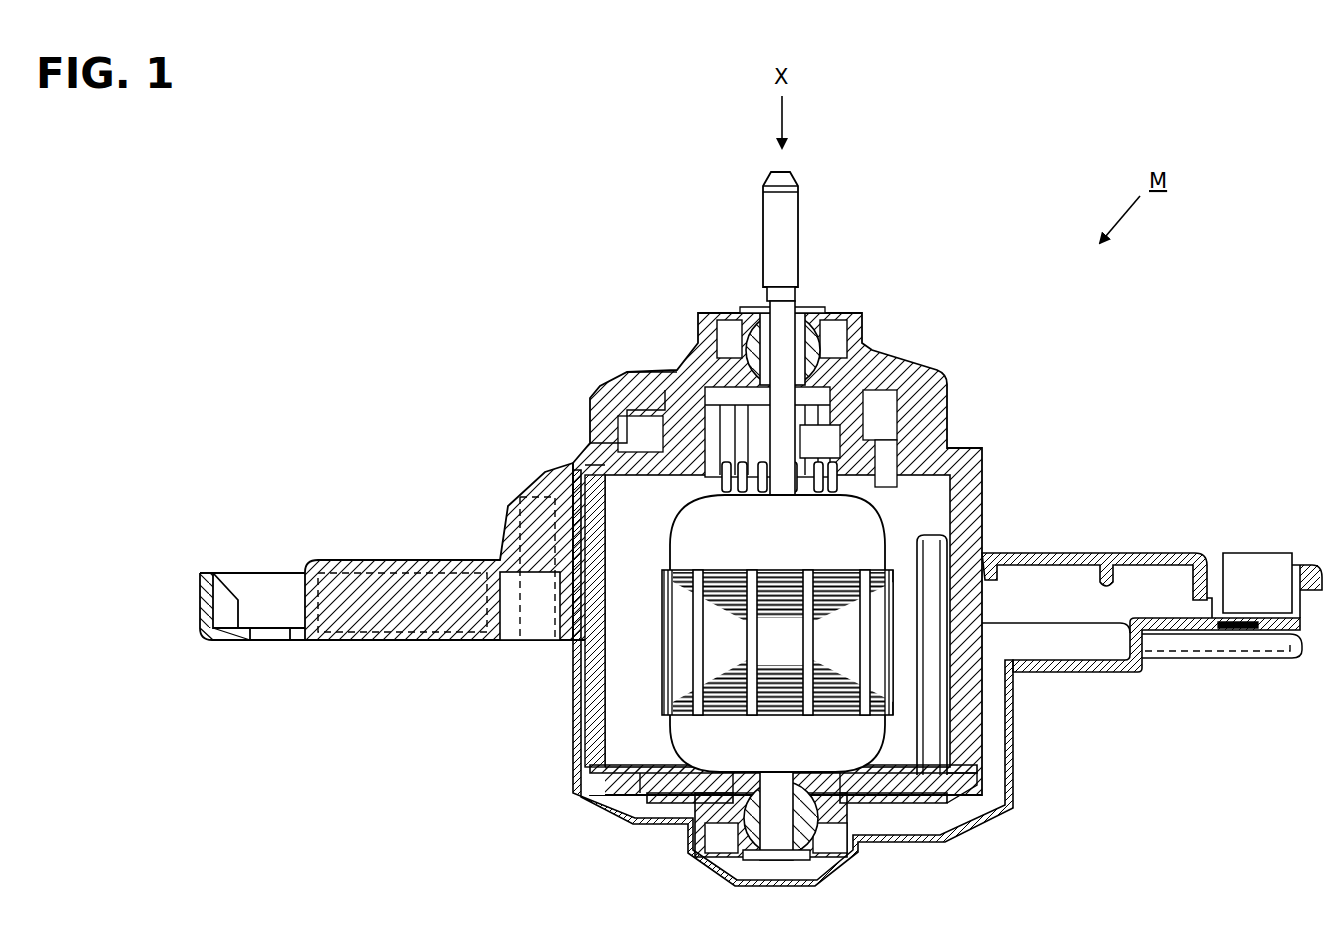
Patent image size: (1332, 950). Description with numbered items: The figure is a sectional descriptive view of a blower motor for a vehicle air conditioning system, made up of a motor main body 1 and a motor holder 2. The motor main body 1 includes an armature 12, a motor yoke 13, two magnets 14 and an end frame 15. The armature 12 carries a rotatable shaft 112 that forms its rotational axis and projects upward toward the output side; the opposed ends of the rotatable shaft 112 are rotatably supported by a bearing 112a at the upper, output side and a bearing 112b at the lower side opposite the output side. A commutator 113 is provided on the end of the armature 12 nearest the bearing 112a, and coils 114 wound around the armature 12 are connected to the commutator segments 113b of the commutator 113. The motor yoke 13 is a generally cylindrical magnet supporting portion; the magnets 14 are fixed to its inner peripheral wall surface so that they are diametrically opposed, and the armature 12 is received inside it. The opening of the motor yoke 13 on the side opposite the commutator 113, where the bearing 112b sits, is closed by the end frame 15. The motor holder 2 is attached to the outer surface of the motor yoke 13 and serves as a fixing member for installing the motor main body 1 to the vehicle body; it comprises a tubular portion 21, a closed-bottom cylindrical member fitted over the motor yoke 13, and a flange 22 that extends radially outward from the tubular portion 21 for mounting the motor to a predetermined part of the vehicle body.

The motor main body 1 is at (878, 352).
The motor holder 2 is at (1148, 571).
The armature 12 is at (655, 729).
The motor yoke 13 is at (955, 757).
The magnets 14 is at (932, 690).
The end frame 15 is at (955, 793).
The tubular portion 21 is at (975, 517).
The flange 22 is at (1050, 562).
The rotatable shaft 112 is at (793, 238).
The bearing 112a is at (757, 343).
The bearing 112b is at (742, 835).
The commutator 113 is at (822, 422).
The commutator segments 113b is at (838, 458).
The coils 114 is at (860, 528).